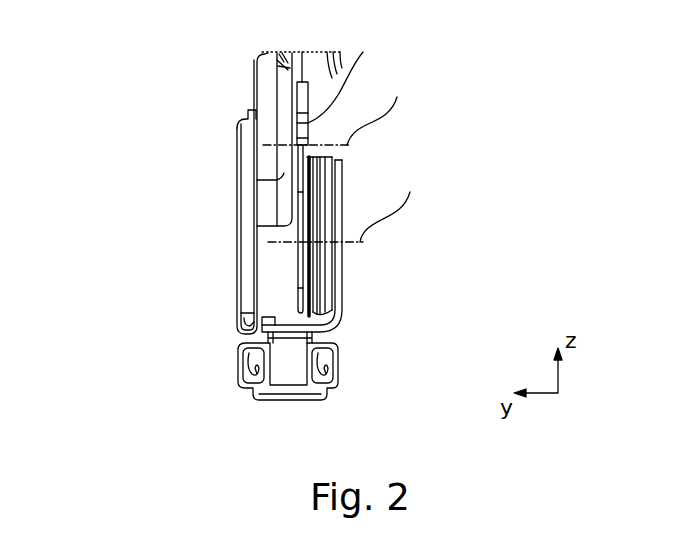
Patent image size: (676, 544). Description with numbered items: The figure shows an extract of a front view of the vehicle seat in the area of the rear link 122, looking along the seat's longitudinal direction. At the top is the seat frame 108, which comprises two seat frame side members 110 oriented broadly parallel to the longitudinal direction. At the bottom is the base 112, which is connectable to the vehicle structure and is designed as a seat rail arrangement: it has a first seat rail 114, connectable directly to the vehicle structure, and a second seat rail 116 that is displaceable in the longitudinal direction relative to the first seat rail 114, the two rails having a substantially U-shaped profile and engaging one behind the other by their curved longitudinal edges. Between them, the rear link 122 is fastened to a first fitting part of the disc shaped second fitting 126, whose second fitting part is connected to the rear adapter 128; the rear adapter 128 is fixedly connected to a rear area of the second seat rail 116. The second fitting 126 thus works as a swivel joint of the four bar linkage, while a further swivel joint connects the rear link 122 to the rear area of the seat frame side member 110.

The seat frame 108 is at (241, 183).
The seat frame side member 110 is at (265, 83).
The base 112 is at (292, 230).
The first seat rail 114 is at (244, 380).
The second seat rail 116 is at (240, 345).
The rear link 122 is at (308, 95).
The second fitting 126 is at (318, 190).
The rear adapter 128 is at (341, 297).